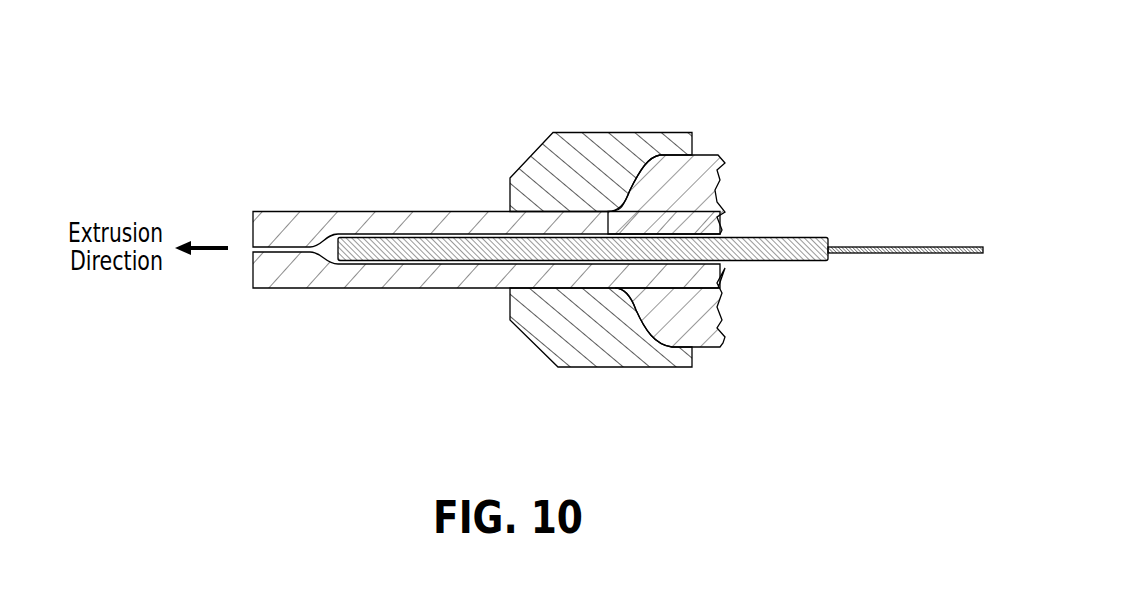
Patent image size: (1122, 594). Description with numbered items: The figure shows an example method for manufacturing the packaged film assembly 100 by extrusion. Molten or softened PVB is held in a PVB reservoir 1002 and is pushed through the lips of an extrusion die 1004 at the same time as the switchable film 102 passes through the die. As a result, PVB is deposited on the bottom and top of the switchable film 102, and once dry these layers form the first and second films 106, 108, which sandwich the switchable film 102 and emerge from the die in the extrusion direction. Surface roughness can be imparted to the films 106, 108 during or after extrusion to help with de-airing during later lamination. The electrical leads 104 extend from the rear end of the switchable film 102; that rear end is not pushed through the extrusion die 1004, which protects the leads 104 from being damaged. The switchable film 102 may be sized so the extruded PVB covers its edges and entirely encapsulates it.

The packaged film assembly 100 is at (613, 192).
The switchable film 102 is at (760, 238).
The electrical leads 104 is at (877, 247).
The first film 106 is at (320, 289).
The second film 108 is at (313, 211).
The PVB reservoir 1002 is at (722, 192).
The extrusion die 1004 is at (628, 132).